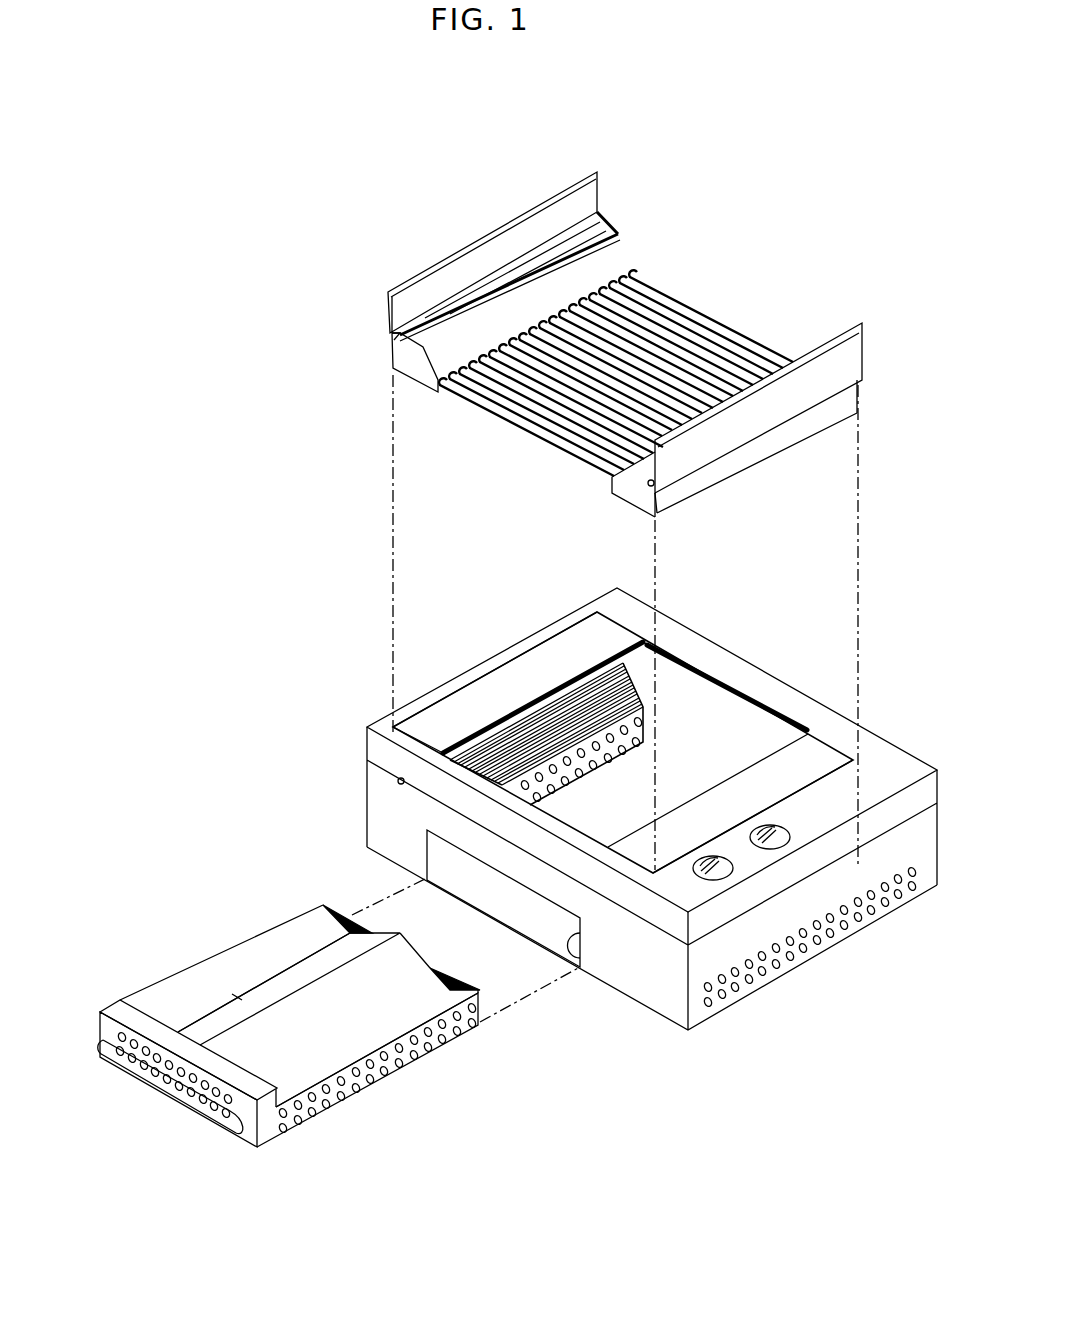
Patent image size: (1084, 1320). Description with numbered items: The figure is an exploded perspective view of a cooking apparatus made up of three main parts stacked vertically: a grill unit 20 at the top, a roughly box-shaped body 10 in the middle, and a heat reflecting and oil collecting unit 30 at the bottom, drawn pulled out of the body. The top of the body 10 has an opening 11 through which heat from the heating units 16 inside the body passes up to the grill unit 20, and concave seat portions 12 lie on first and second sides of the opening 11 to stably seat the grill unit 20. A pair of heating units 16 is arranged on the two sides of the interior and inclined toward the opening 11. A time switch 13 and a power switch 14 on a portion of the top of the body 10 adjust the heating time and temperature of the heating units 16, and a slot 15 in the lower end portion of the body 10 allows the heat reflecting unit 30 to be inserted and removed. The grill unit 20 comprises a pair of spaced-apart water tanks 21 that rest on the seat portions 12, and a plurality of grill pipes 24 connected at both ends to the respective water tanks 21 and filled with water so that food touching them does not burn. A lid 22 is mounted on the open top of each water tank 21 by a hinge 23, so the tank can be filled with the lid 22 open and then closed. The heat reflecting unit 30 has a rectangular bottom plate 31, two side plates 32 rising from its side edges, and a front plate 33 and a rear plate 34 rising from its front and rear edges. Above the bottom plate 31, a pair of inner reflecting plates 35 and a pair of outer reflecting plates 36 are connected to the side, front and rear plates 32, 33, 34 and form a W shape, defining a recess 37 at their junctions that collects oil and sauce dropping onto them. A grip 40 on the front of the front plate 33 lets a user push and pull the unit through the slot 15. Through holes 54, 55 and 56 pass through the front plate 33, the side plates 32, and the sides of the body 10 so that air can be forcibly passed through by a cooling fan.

The body 10 is at (637, 811).
The opening 11 is at (747, 700).
The concave seat portions 12 is at (497, 677).
The time switch 13 is at (737, 870).
The power switch 14 is at (792, 840).
The slot 15 is at (573, 966).
The heating units 16 is at (500, 738).
The grill unit 20 is at (592, 341).
The water tanks 21 is at (405, 364).
The lid 22 is at (541, 203).
The hinge 23 is at (390, 340).
The grill pipes 24 is at (530, 444).
The heat reflecting and oil collecting unit 30 is at (303, 1048).
The bottom plate 31 is at (308, 1123).
The side plates 32 is at (365, 1070).
The front plate 33 is at (243, 1132).
The rear plate 34 is at (340, 910).
The inner reflecting plates 35 is at (298, 968).
The outer reflecting plates 36 is at (163, 1012).
The recess 37 is at (235, 997).
The grip 40 is at (183, 1110).
The through holes 54 is at (133, 1070).
The through holes 55 is at (340, 1107).
The through holes 56 is at (647, 717).